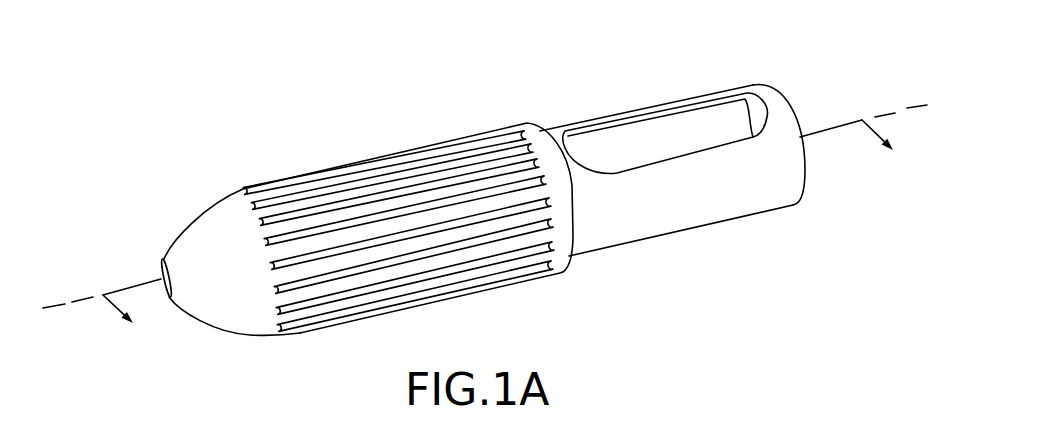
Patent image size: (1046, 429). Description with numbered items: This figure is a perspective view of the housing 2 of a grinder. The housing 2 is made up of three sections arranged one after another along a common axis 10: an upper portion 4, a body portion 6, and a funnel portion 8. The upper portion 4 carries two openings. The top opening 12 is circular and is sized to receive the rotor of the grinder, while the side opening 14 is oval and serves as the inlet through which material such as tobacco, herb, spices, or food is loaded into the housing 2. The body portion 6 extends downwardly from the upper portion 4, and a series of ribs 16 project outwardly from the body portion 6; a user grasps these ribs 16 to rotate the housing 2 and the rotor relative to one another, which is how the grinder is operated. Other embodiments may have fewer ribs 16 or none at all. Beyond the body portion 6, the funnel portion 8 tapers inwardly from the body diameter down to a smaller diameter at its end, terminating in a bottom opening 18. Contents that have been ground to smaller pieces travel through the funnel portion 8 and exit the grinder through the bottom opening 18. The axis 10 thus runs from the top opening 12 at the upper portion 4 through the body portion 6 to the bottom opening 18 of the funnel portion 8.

The housing 2 is at (391, 97).
The upper portion 4 is at (757, 90).
The body portion 6 is at (455, 140).
The funnel portion 8 is at (205, 238).
The axis 10 is at (927, 105).
The top opening 12 is at (815, 108).
The side opening 14 is at (659, 129).
The ribs 16 is at (357, 188).
The bottom opening 18 is at (163, 265).